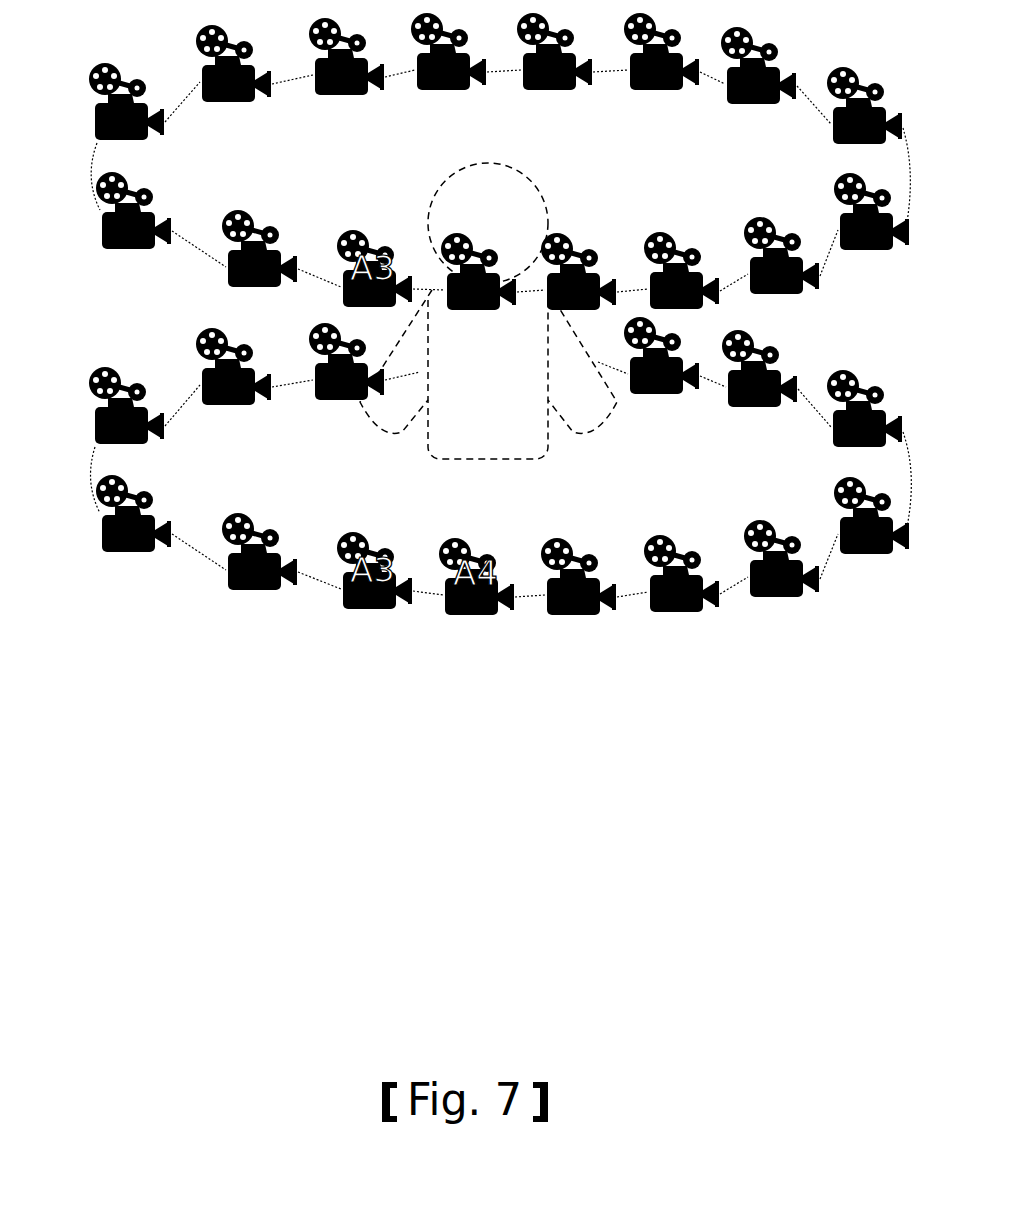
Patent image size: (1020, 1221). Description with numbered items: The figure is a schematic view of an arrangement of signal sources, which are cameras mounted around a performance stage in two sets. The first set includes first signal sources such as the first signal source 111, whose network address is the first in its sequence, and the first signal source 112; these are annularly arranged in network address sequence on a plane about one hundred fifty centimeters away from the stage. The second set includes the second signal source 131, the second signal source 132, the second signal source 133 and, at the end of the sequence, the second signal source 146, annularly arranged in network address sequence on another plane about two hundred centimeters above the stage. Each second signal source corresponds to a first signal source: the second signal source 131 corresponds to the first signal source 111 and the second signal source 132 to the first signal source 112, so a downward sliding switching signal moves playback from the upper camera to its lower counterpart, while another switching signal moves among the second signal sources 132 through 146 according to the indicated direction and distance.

The first signal source 111 is at (577, 624).
The first signal source 112 is at (682, 622).
The second signal source 131 is at (580, 234).
The second signal source 132 is at (678, 222).
The second signal source 133 is at (783, 219).
The second signal source 146 is at (478, 234).